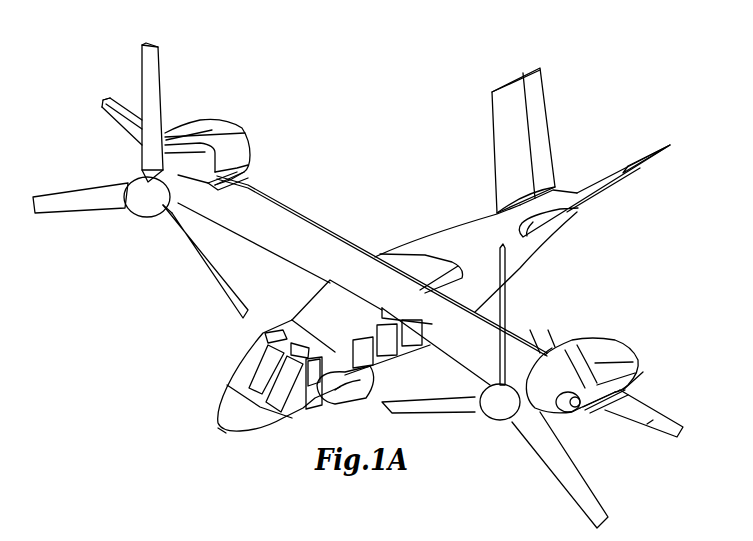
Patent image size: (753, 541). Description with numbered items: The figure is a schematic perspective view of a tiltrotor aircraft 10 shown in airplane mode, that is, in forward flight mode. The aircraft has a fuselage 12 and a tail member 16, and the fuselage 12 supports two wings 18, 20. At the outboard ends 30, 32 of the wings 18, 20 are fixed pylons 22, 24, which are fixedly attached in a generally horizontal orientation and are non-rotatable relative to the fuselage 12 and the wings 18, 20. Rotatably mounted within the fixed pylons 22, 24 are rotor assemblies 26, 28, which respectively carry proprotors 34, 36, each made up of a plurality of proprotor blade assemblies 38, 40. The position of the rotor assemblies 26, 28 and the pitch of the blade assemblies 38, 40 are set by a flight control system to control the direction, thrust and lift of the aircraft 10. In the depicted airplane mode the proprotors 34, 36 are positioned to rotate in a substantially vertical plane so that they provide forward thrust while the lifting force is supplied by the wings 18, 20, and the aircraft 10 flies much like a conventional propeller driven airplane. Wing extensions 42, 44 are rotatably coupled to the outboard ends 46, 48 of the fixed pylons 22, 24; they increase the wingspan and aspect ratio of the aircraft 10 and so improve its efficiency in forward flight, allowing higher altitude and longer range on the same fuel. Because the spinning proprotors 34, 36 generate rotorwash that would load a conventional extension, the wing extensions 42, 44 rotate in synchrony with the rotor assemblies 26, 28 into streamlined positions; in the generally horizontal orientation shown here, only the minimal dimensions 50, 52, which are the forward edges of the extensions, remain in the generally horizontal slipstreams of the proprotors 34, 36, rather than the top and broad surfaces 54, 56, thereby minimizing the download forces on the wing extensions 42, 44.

The tiltrotor aircraft 10 is at (403, 200).
The fuselage 12 is at (469, 208).
The tail member 16 is at (541, 120).
The wing 18 is at (460, 344).
The wing 20 is at (285, 212).
The fixed pylon 22 is at (598, 335).
The fixed pylon 24 is at (212, 116).
The rotor assembly 26 is at (547, 362).
The rotor assembly 28 is at (205, 195).
The outboard end 30 is at (527, 360).
The outboard end 32 is at (250, 178).
The proprotor 34 is at (488, 420).
The proprotor 36 is at (162, 224).
The proprotor blade assembly 38 is at (555, 468).
The proprotor blade assembly 40 is at (152, 63).
The wing extension 42 is at (670, 420).
The wing extension 44 is at (105, 105).
The outboard end 46 is at (637, 372).
The outboard end 48 is at (190, 130).
The minimal dimension 50 is at (613, 412).
The minimal dimension 52 is at (115, 127).
The top and broad surface 54 is at (647, 424).
The top and broad surface 56 is at (122, 110).